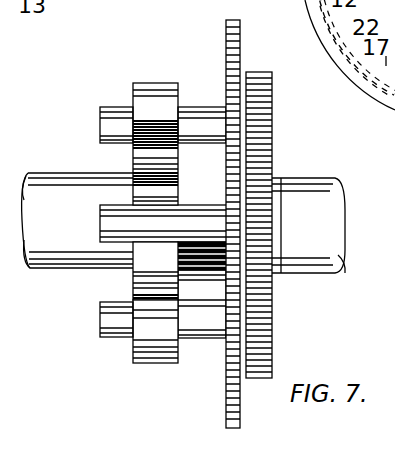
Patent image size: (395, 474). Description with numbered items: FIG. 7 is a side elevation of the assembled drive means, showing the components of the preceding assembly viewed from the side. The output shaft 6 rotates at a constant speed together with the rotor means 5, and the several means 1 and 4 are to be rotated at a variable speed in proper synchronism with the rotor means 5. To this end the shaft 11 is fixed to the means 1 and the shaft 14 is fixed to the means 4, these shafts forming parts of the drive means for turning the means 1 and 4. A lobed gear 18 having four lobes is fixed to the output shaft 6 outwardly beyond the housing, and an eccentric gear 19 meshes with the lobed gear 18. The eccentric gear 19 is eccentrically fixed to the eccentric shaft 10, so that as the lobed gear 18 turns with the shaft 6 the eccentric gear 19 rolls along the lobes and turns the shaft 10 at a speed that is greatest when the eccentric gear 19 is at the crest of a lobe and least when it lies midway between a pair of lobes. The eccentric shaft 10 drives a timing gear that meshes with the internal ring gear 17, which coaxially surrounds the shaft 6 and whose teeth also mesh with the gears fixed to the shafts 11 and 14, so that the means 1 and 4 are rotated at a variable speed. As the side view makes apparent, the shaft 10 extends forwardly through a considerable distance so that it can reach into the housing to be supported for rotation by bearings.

The means 1 is at (170, 88).
The means 4 is at (137, 350).
The rotor means 5 is at (152, 263).
The output shaft 6 is at (62, 198).
The eccentric shaft 10 is at (114, 219).
The shaft 11 is at (115, 115).
The shaft 14 is at (115, 313).
The internal ring gear 17 is at (229, 63).
The lobed gear 18 is at (263, 110).
The eccentric gear 19 is at (262, 231).